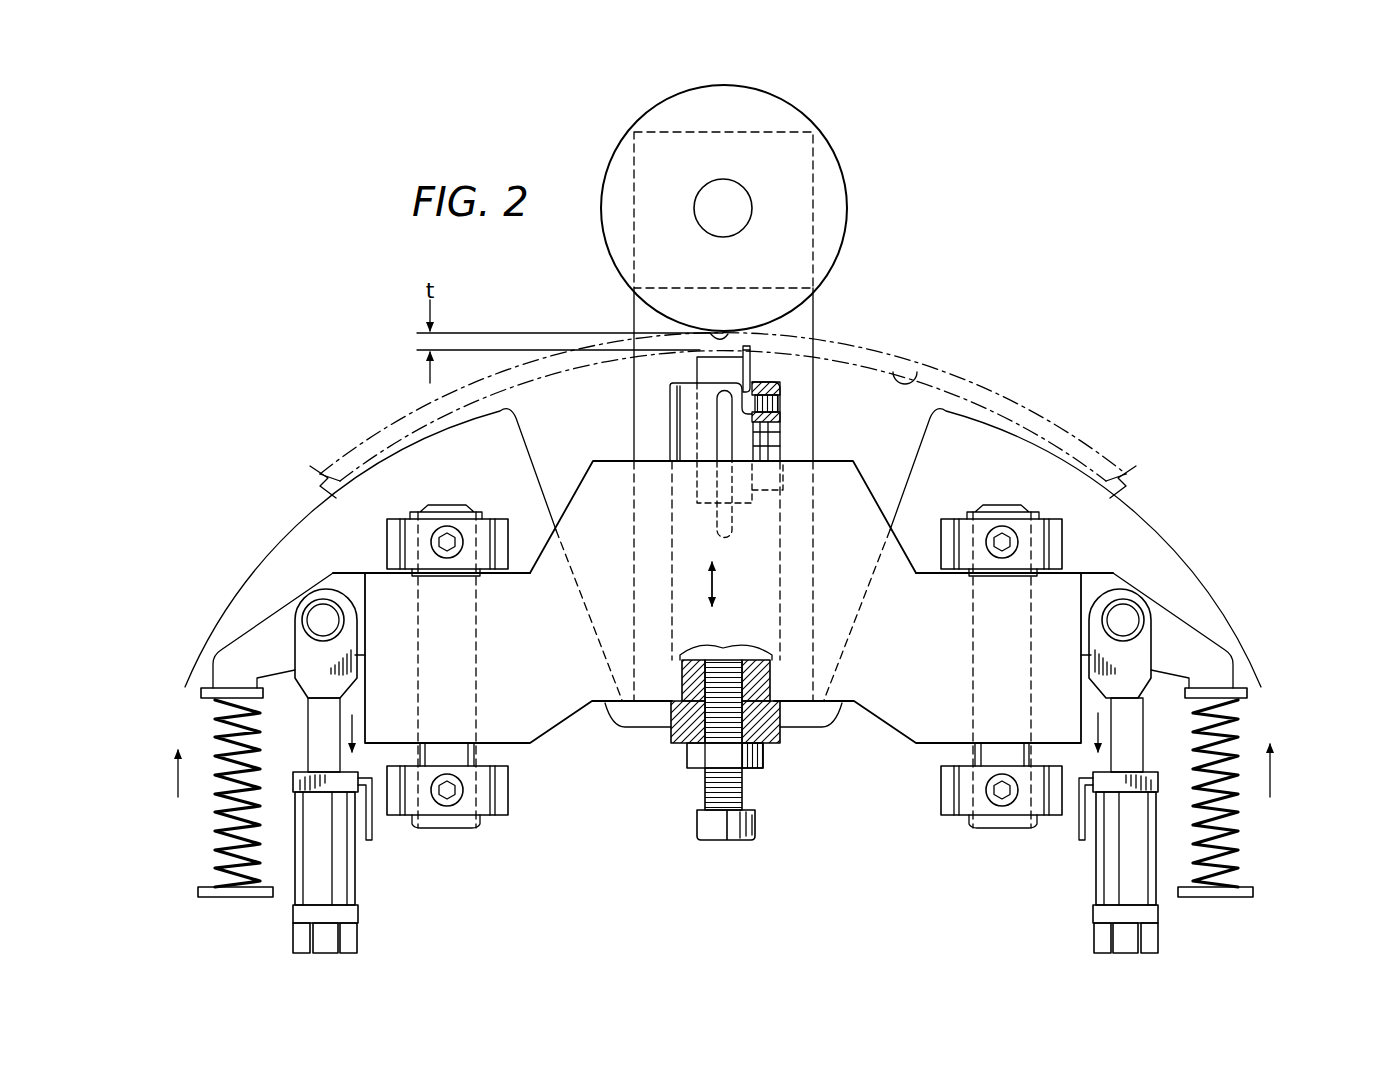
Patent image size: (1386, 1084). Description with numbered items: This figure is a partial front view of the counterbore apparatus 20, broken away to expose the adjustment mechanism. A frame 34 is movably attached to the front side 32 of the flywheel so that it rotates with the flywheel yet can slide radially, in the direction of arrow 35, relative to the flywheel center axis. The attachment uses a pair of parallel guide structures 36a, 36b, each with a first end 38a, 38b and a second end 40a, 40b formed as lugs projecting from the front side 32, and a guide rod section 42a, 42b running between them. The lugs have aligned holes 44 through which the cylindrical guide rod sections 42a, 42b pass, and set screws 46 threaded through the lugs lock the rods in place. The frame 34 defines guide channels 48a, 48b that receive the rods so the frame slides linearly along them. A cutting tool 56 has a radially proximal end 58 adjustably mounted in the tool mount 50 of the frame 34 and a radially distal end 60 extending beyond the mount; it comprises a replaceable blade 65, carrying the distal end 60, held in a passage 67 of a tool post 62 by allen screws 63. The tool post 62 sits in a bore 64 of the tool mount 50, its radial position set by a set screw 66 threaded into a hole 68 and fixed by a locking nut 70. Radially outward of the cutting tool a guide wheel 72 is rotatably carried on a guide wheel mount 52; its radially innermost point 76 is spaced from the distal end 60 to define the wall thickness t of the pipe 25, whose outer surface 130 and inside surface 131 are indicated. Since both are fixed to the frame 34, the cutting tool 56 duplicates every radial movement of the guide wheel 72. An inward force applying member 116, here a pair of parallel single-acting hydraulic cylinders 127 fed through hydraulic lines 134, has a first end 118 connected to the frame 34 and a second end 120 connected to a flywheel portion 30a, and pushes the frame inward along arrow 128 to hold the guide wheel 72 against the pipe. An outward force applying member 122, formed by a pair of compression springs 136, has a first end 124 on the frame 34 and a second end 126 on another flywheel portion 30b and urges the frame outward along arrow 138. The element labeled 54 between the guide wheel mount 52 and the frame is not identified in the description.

The wheel dressing assembly 20 is at (1109, 306).
The pipe 25 is at (967, 366).
The portion of flywheel 30a is at (320, 938).
The portion of flywheel 30b is at (228, 898).
The front side of flywheel 32 is at (1148, 553).
The frame 34 is at (910, 672).
The arrow 35 is at (714, 586).
The guide structure 36a is at (1001, 500).
The guide structure 36b is at (448, 500).
The first end 38a is at (1063, 548).
The first end 38b is at (387, 548).
The second end 40a is at (941, 793).
The second end 40b is at (508, 795).
The guide rod section 42a is at (962, 766).
The guide rod section 42b is at (485, 766).
The holes 44 is at (470, 528).
The set screws 46 is at (448, 558).
The guide channel 48a is at (972, 676).
The guide channel 48b is at (477, 676).
The tool mount 50 is at (612, 461).
The guide wheel mount 52 is at (813, 215).
The wheel width lines 54 is at (813, 318).
The cutting tool 56 is at (798, 373).
The radially proximal end 58 is at (682, 690).
The radially distal end 60 is at (746, 346).
The tool post 62 is at (670, 418).
The allen screws 63 is at (781, 432).
The bore 64 is at (675, 618).
The replaceable blade 65 is at (696, 372).
The set screw 66 is at (745, 795).
The passage 67 is at (696, 503).
The hole 68 is at (695, 748).
The locking nut 70 is at (765, 760).
The guide wheel 72 is at (828, 130).
The radially innermost point 76 is at (712, 335).
The inward force applying member 116 is at (423, 904).
The first end 118 is at (295, 650).
The second end 120 is at (358, 938).
The outward force applying member 122 is at (188, 718).
The first end 124 is at (258, 702).
The second end 126 is at (205, 888).
The hydraulic cylinder 127 is at (355, 878).
The arrow 128 is at (356, 718).
The outer surface of pipe 130 is at (1006, 393).
The inside surface of pipe 131 is at (915, 370).
The hydraulic lines 134 is at (374, 838).
The compression spring 136 is at (215, 810).
The arrow 138 is at (178, 775).